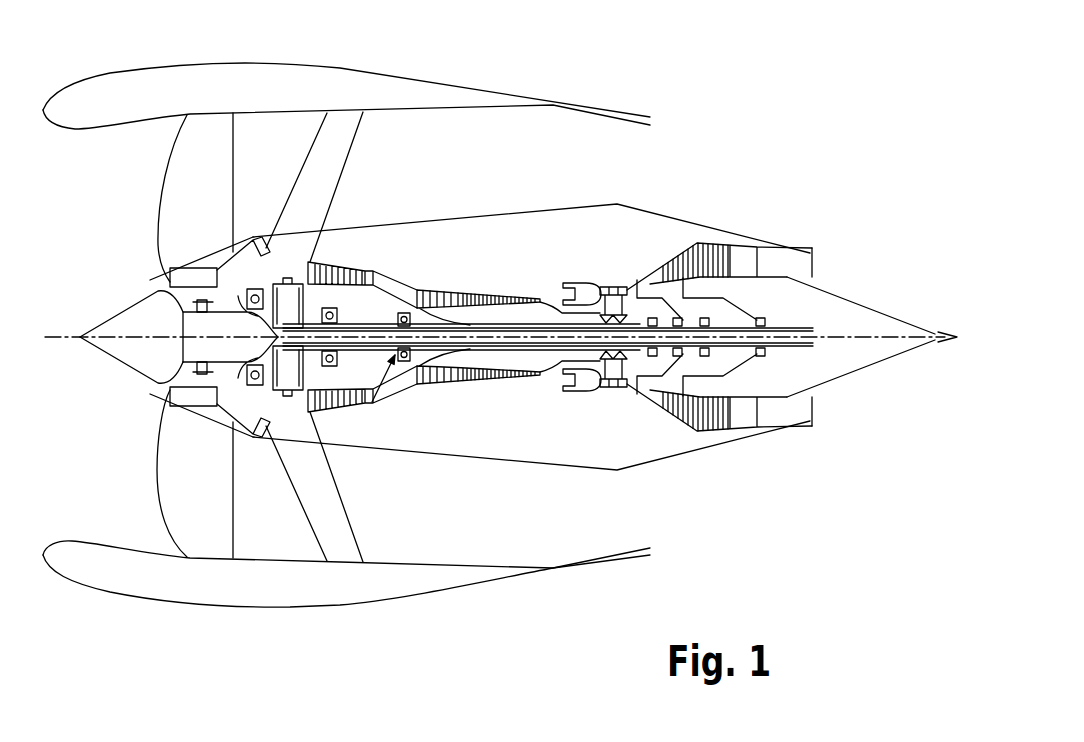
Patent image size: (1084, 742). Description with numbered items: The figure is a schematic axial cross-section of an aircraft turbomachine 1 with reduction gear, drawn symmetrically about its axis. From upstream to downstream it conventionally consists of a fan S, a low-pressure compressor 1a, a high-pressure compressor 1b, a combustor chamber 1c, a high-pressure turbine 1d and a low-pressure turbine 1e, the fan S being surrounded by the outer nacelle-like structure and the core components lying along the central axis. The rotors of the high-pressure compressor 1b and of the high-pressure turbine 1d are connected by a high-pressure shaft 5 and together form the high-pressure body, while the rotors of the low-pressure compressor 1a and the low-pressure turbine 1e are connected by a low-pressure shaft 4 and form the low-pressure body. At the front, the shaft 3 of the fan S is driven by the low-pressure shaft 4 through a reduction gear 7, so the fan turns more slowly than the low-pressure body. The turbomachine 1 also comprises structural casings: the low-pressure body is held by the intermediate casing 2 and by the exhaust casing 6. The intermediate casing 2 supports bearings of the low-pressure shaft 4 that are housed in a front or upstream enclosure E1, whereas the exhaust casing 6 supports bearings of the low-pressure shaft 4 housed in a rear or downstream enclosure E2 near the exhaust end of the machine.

The turbomachine 1 is at (783, 178).
The low-pressure compressor 1a is at (337, 251).
The high-pressure compressor 1b is at (501, 277).
The combustor chamber 1c is at (577, 275).
The high-pressure turbine 1d is at (610, 275).
The low-pressure turbine 1e is at (702, 243).
The intermediate casing 2 is at (367, 140).
The fan shaft 3 is at (160, 278).
The low-pressure shaft 4 is at (480, 350).
The high-pressure shaft 5 is at (553, 373).
The exhaust casing 6 is at (764, 263).
The reduction gear 7 is at (257, 237).
The fan S is at (140, 197).
The front enclosure E1 is at (237, 373).
The rear enclosure E2 is at (708, 295).